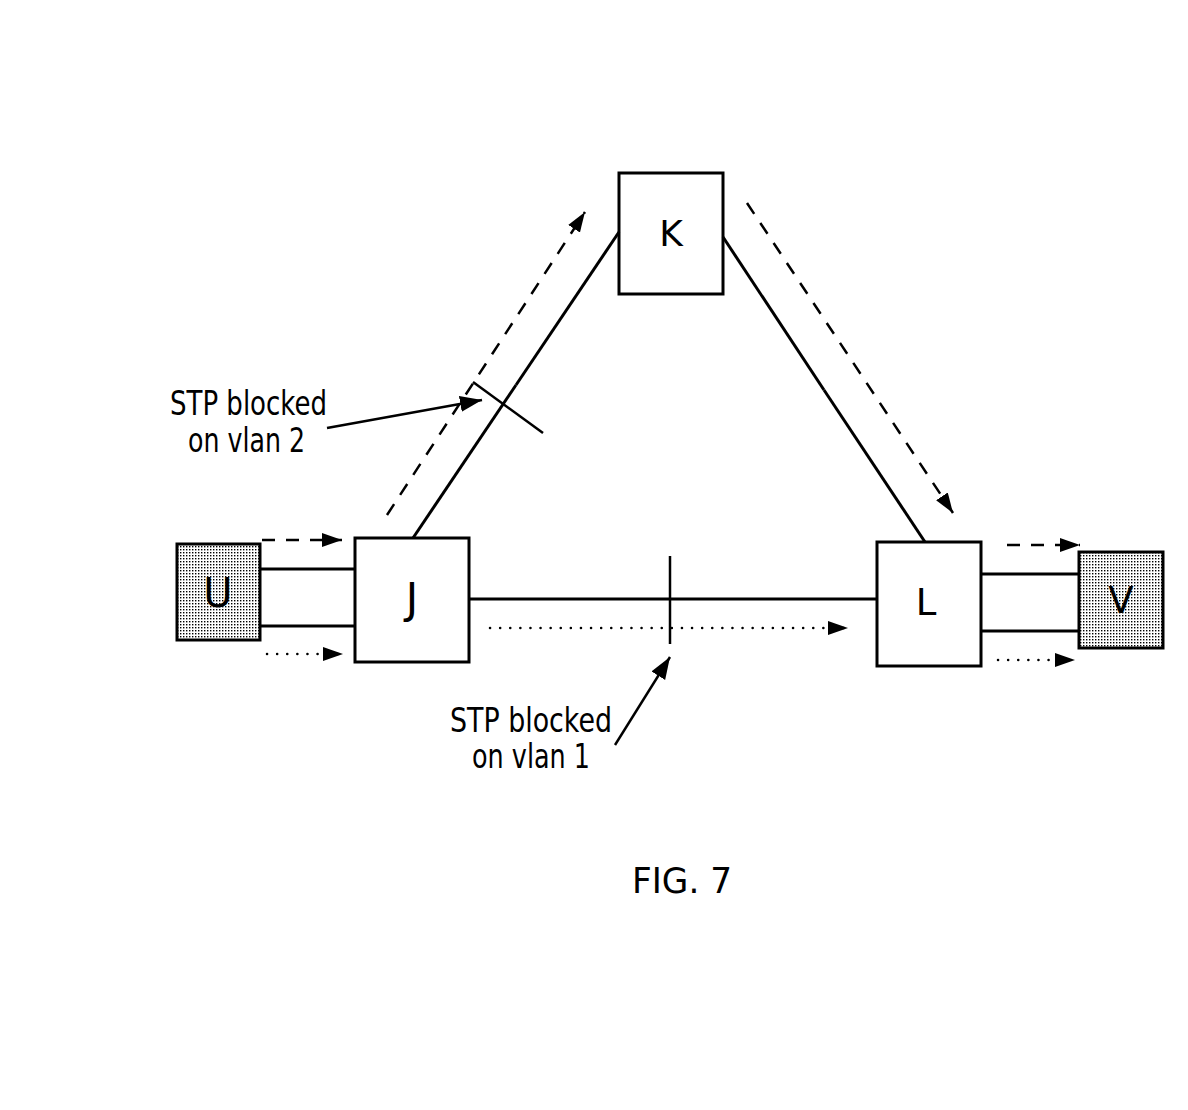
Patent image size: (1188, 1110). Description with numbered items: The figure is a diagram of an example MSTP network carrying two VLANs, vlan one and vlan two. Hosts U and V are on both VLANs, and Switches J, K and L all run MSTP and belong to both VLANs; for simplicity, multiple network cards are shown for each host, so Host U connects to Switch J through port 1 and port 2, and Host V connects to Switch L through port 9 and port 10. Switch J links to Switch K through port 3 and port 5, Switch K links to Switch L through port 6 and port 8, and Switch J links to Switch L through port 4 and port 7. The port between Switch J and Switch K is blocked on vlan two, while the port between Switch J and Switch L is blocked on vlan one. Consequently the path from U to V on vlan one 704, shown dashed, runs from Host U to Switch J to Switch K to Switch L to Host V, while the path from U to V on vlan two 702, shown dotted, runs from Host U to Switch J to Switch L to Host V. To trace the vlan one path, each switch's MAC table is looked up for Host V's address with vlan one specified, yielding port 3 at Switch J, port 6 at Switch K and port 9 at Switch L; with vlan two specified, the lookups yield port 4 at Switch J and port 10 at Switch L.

The port 1 of switch J (link to U, vlan 1) 1 is at (307, 555).
The port 2 of switch J (link to U, vlan 2) 2 is at (307, 612).
The port 3 is at (457, 463).
The port 4 is at (571, 616).
The port 5 of switch K (link to J) 5 is at (567, 300).
The port 6 is at (773, 302).
The port 7 of switch L (link to J) 7 is at (775, 618).
The port 8 of switch L (link to K) 8 is at (886, 466).
The port 9 is at (1030, 558).
The port 10 is at (1030, 616).
The path from U to V on vlan 2 702 is at (748, 635).
The path from U to V on vlan 1 704 is at (817, 305).